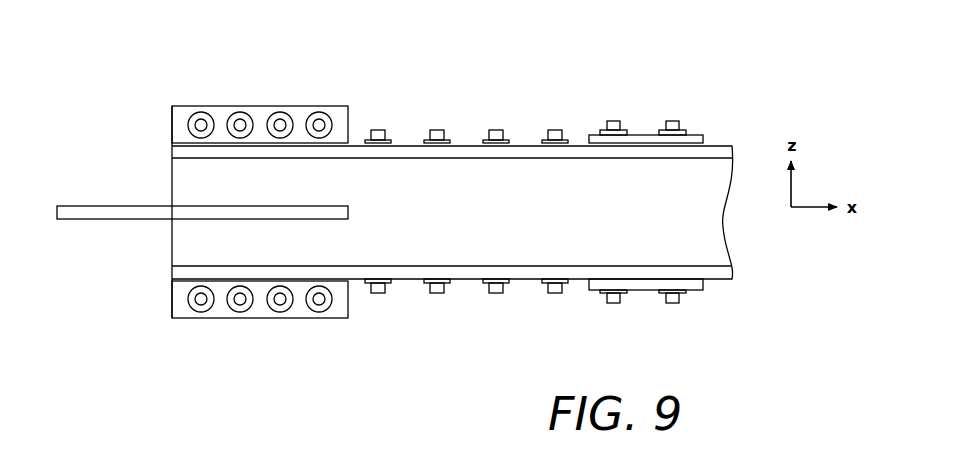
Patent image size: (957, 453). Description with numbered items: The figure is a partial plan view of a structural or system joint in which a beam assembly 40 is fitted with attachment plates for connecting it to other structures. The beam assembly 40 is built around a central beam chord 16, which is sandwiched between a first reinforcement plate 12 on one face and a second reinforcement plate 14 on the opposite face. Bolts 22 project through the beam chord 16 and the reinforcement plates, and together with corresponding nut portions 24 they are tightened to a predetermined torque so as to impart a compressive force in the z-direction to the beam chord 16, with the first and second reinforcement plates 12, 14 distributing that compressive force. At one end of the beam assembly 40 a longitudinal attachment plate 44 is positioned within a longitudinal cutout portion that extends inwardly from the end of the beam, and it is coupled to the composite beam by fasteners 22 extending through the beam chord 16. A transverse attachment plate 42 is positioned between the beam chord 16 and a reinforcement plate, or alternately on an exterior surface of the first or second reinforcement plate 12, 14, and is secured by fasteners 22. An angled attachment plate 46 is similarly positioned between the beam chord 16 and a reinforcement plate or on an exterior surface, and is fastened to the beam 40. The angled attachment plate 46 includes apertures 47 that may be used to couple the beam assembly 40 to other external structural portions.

The beam assembly 40 is at (687, 72).
The beam chord 16 is at (621, 206).
The second reinforcement plate 14 is at (577, 143).
The first reinforcement plate 12 is at (518, 280).
The longitudinal attachment plate 44 is at (100, 205).
The angled attachment plate 46 is at (261, 108).
The apertures 47 is at (320, 124).
The bolts 22 is at (437, 130).
The nut portions 24 is at (437, 293).
The transverse attachment plate 42 is at (703, 138).